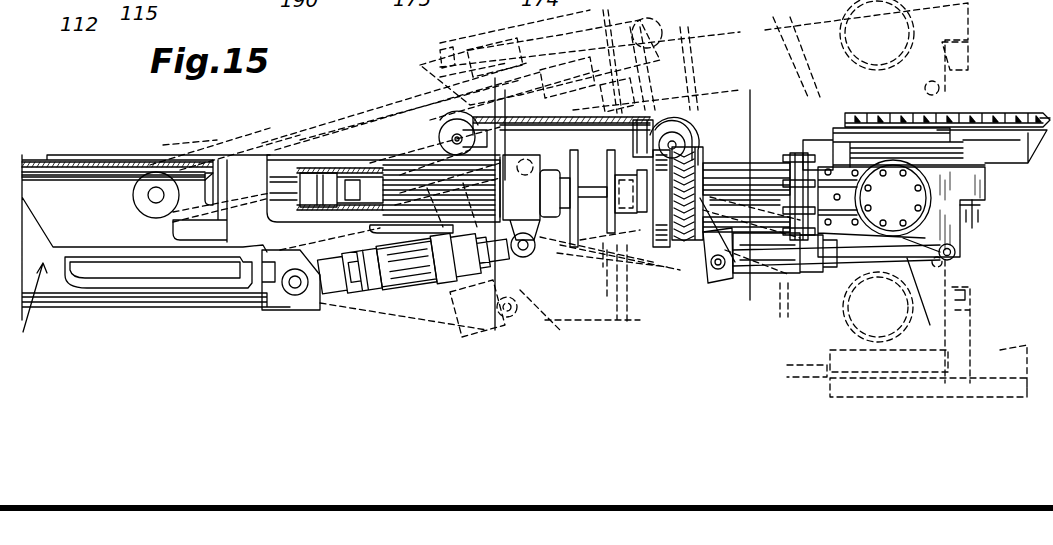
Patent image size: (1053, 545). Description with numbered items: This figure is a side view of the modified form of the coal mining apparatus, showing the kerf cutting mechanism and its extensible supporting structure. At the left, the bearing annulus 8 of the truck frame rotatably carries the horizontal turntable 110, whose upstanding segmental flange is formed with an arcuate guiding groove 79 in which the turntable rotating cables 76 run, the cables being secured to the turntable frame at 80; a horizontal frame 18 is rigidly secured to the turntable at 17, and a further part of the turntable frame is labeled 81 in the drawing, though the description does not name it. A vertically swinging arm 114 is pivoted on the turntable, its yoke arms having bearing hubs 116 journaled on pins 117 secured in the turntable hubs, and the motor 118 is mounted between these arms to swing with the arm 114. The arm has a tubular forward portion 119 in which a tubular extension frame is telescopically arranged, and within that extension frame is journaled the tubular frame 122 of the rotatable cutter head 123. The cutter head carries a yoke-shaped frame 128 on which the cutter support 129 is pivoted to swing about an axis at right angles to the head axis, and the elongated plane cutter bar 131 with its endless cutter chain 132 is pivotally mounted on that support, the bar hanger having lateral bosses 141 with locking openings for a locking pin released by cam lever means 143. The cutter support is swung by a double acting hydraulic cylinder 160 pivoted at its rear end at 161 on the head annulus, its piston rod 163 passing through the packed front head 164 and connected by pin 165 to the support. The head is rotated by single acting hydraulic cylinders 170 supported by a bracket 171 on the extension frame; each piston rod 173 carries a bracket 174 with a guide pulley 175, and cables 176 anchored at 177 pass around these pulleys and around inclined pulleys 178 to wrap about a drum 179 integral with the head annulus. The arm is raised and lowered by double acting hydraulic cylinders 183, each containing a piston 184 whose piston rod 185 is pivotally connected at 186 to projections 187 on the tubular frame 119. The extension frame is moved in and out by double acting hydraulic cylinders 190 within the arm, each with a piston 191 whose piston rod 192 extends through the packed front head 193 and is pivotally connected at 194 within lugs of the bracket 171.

The bearing annulus 8 is at (157, 272).
The securing point 17 is at (511, 333).
The horizontal frame 18 is at (761, 305).
The cables 76 is at (108, 170).
The arcuate guiding groove 79 is at (52, 172).
The cable securing point 80 is at (220, 178).
The guide 81 is at (50, 193).
The horizontal turntable 110 is at (38, 165).
The vertically swinging arm 114 is at (267, 143).
The bearing hubs 116 is at (761, 92).
The pins 117 is at (156, 195).
The motor 118 is at (80, 152).
The tubular forward portion 119 is at (373, 147).
The tubular frame 122 is at (760, 173).
The rotatable cutter head 123 is at (797, 180).
The yoke-shaped frame 128 is at (835, 177).
The cutter support 129 is at (960, 190).
The cutter bar 131 is at (977, 113).
The endless cutter chain 132 is at (1023, 114).
The lateral bosses 141 is at (878, 142).
The cam lever means 143 is at (977, 226).
The double acting hydraulic cylinder 160 is at (737, 283).
The cylinder pivot 161 is at (717, 277).
The piston rod 163 is at (900, 257).
The packed front head 164 is at (830, 275).
The pin 165 is at (957, 254).
The single acting hydraulic cylinders 170 is at (592, 113).
The bracket 171 is at (653, 115).
The piston rod 173 is at (510, 127).
The bracket 174 is at (460, 140).
The guide pulley 175 is at (445, 137).
The cables 176 is at (558, 112).
The cable anchor 177 is at (511, 90).
The inclined pulleys 178 is at (683, 125).
The drum 179 is at (673, 250).
The double acting hydraulic cylinders 183 is at (397, 293).
The piston 184 is at (370, 283).
The piston rod 185 is at (423, 267).
The pivotal connection 186 is at (548, 265).
The projections 187 is at (558, 233).
The double acting hydraulic cylinders 190 is at (293, 167).
The piston 191 is at (318, 180).
The piston rod 192 is at (595, 270).
The packed front head 193 is at (555, 233).
The pivotal connection 194 is at (615, 250).